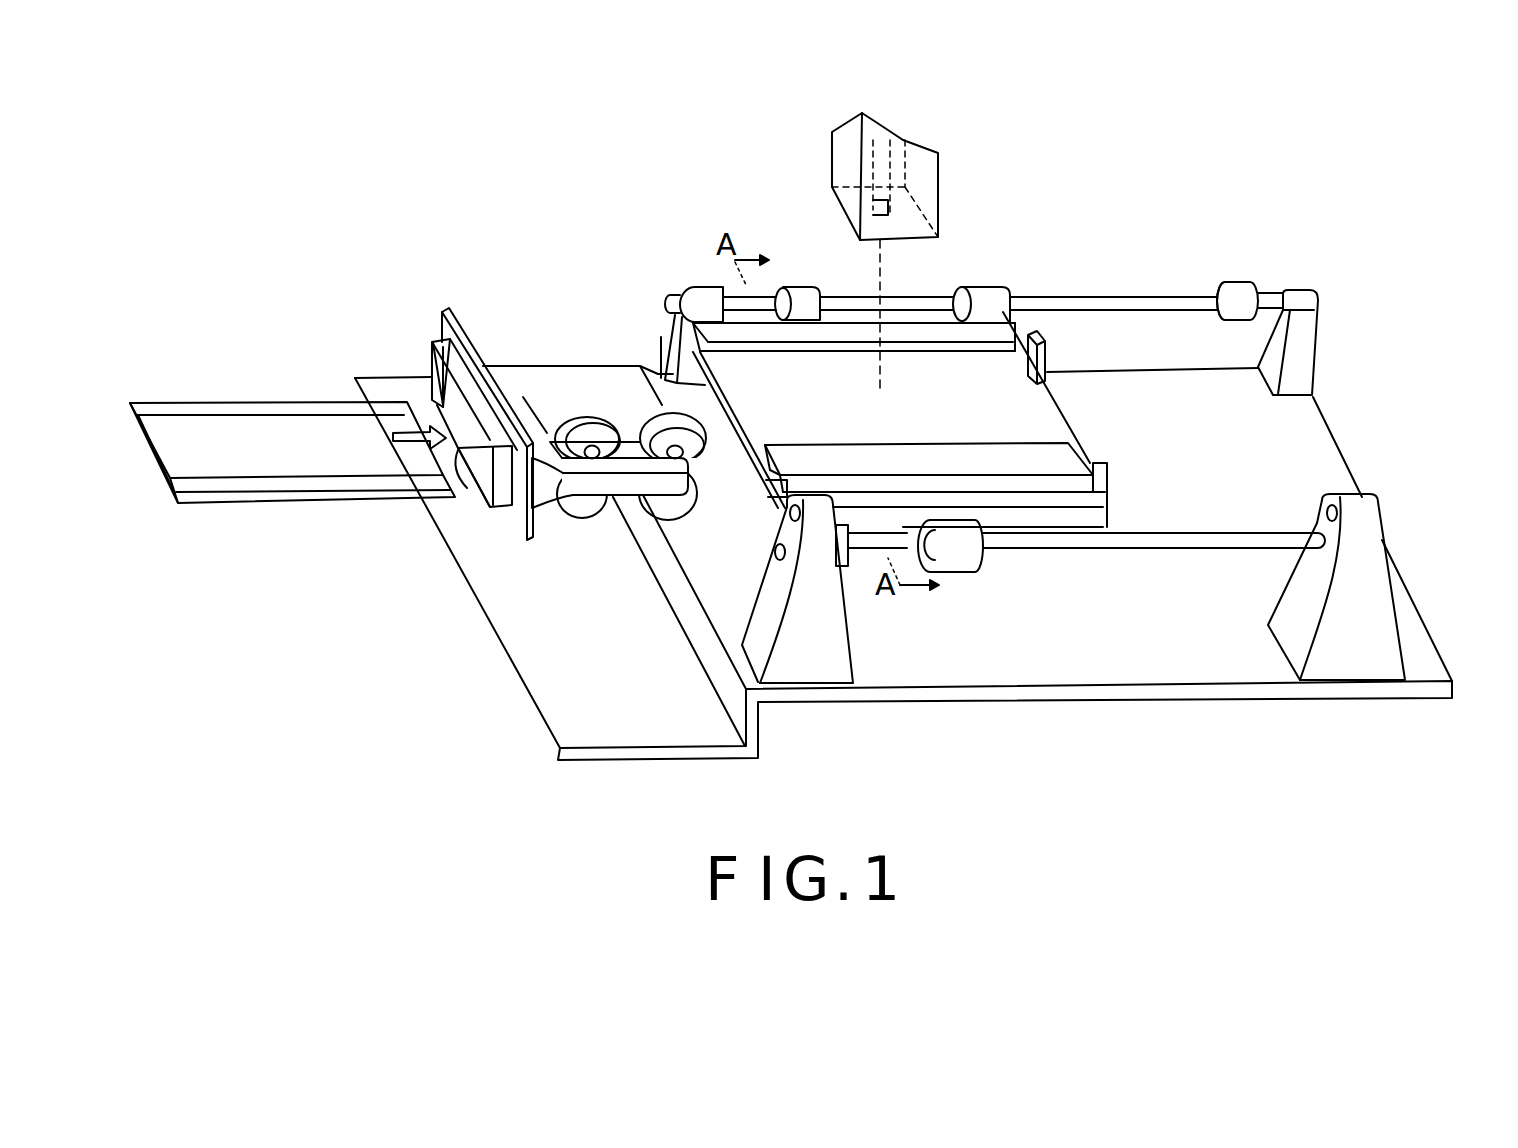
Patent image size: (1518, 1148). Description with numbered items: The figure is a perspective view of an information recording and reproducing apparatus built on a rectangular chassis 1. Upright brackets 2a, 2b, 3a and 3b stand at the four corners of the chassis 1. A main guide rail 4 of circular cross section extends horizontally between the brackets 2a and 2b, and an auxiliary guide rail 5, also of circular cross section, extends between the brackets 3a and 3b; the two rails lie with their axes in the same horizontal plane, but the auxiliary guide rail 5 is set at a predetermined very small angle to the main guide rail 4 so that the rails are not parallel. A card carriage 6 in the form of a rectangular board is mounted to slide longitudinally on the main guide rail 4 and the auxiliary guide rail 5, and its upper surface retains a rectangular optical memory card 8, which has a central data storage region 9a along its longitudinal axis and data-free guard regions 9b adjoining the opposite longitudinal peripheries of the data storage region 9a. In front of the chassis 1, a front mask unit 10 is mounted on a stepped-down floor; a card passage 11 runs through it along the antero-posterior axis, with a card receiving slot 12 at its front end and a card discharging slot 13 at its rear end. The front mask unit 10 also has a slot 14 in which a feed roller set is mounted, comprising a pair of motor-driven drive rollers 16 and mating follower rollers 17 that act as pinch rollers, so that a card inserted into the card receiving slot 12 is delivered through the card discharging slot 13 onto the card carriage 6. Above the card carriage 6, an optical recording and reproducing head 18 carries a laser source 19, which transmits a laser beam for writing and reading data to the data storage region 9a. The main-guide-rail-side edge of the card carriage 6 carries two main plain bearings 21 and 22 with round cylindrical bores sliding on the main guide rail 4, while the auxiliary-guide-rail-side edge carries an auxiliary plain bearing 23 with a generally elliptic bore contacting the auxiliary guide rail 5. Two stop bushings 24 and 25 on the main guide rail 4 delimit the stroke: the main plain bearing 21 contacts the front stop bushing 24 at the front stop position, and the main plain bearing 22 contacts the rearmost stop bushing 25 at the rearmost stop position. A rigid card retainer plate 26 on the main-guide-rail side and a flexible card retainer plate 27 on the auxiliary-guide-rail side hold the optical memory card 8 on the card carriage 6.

The chassis 1 is at (984, 697).
The bracket 2a is at (667, 340).
The bracket 2b is at (1300, 355).
The bracket 3a is at (833, 620).
The bracket 3b is at (1373, 597).
The main guide rail 4 is at (1135, 295).
The auxiliary guide rail 5 is at (1175, 538).
The card carriage 6 is at (1030, 413).
The optical memory card 8 is at (186, 401).
The data storage region 9a is at (272, 432).
The guard regions 9b is at (262, 486).
The front mask unit 10 is at (482, 361).
The card passage 11 is at (432, 398).
The card receiving slot 12 is at (458, 452).
The card discharging slot 13 is at (672, 398).
The slot 14 is at (618, 497).
The drive rollers 16 is at (663, 433).
The follower rollers 17 is at (575, 513).
The optical recording and reproducing head 18 is at (938, 165).
The laser source 19 is at (865, 215).
The main plain bearing 21 is at (800, 286).
The main plain bearing 22 is at (997, 285).
The auxiliary plain bearing 23 is at (983, 557).
The front stop bushing 24 is at (696, 288).
The rearmost stop bushing 25 is at (1247, 283).
The rigid card retainer plate 26 is at (945, 322).
The flexible card retainer plate 27 is at (957, 453).